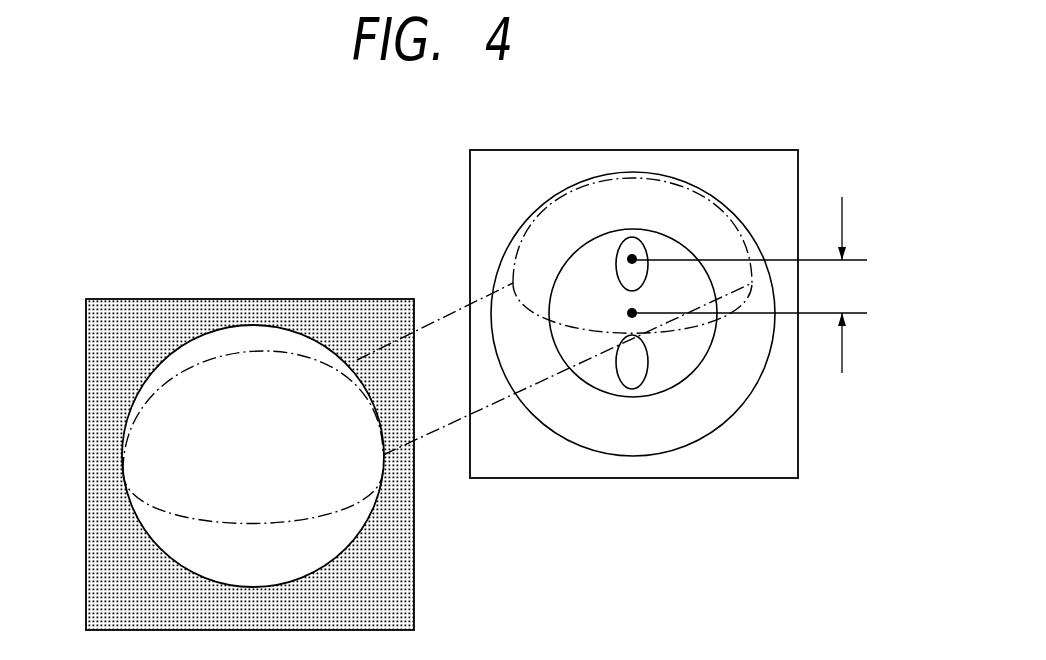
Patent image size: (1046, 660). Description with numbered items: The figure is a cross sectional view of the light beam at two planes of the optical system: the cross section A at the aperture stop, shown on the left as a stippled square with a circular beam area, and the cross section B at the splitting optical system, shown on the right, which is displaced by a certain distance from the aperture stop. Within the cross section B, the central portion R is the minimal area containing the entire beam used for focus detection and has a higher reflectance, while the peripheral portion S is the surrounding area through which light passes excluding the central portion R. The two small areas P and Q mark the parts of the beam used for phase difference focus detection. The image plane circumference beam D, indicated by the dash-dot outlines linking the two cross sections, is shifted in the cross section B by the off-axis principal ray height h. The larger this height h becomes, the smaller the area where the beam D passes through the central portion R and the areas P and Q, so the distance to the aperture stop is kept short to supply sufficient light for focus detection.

The cross section at the aperture stop A is at (163, 299).
The cross section at the splitting optical system B is at (735, 150).
The image plane circumference beam D is at (445, 311).
The area of light beam used for focus detection P is at (633, 254).
The area of light beam used for focus detection Q is at (635, 378).
The central portion R is at (633, 313).
The peripheral portion S is at (633, 314).
The height of an off-axis principal ray h is at (749, 285).